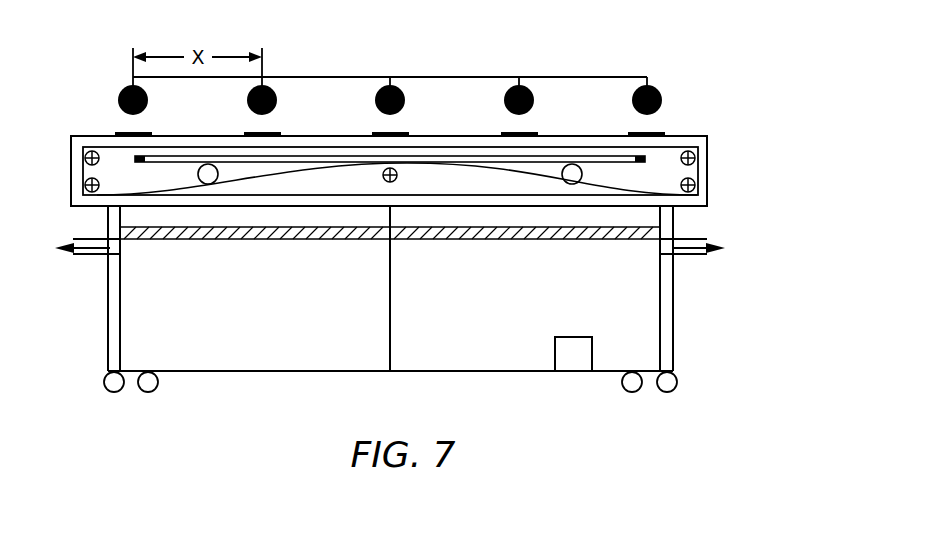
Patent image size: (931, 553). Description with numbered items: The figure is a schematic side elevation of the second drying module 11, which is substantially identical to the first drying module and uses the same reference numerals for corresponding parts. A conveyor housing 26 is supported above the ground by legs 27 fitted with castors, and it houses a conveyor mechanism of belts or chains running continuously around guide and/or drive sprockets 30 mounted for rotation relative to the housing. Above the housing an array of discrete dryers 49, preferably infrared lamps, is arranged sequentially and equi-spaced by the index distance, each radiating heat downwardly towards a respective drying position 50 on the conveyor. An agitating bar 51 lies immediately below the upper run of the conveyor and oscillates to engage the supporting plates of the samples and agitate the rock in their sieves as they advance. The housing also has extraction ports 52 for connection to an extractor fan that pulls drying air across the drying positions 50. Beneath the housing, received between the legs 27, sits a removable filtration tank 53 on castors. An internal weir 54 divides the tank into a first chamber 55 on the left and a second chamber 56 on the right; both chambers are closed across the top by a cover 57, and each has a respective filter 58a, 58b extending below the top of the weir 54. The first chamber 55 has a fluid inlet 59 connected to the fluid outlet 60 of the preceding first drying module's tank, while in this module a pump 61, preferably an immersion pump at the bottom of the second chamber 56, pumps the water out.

The second drying module 11 is at (682, 51).
The conveyor housing 26 is at (705, 160).
The legs 27 is at (104, 385).
The guide and/or drive sprockets 30 is at (697, 180).
The dryers 49 is at (126, 93).
The drying position 50 is at (121, 133).
The agitating bar 51 is at (633, 157).
The extraction ports 52 is at (198, 175).
The filtration tank 53 is at (512, 372).
The weir 54 is at (389, 303).
The first chamber 55 is at (253, 318).
The second chamber 56 is at (553, 308).
The cover 57 is at (120, 208).
The filter 58a is at (160, 239).
The filter 58b is at (580, 239).
The fluid inlet 59 is at (92, 255).
The fluid outlet 60 is at (690, 256).
The pump 61 is at (556, 357).